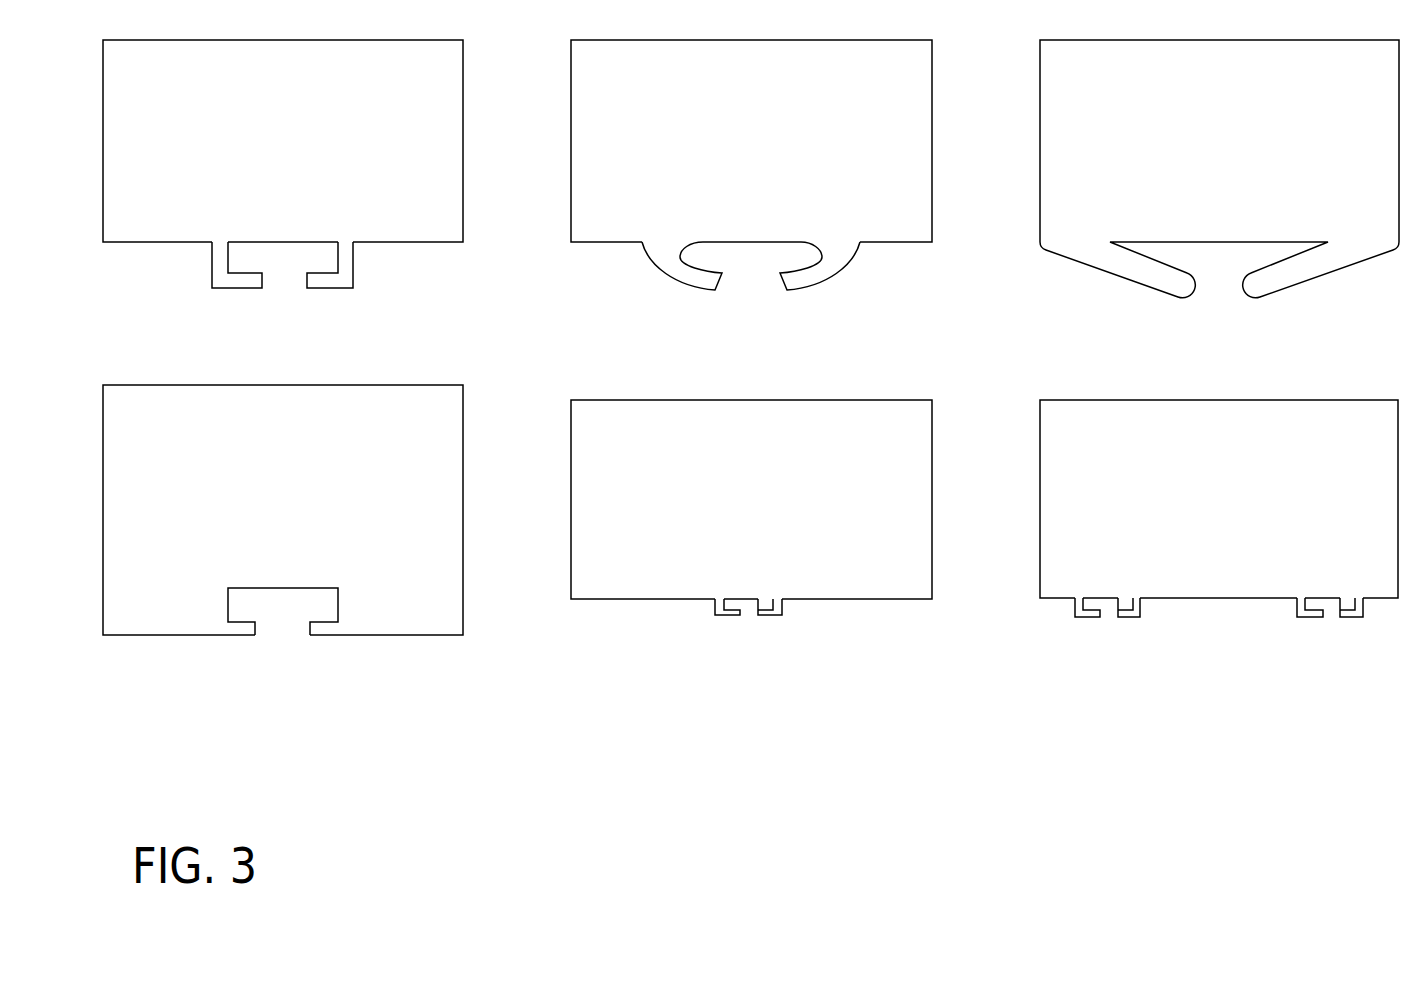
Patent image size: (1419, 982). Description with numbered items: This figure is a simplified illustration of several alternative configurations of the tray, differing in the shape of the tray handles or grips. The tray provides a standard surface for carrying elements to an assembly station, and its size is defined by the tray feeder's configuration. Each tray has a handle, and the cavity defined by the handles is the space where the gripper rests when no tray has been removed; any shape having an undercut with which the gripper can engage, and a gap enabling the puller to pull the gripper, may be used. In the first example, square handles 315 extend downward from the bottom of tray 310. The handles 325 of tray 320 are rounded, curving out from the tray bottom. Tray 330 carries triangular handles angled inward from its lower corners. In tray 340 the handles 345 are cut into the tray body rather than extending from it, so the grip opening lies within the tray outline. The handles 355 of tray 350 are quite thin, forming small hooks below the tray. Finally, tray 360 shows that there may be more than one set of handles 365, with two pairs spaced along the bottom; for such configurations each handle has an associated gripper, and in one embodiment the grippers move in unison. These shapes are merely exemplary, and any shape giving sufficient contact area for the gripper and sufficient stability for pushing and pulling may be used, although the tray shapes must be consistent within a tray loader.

The tray 310 is at (283, 141).
The square handles 315 is at (282, 282).
The tray 320 is at (751, 141).
The rounded handles 325 is at (751, 286).
The tray 330 is at (1219, 184).
The tray 340 is at (283, 510).
The cut-in handles 345 is at (283, 635).
The tray 350 is at (751, 499).
The thin handles 355 is at (751, 632).
The tray 360 is at (1219, 499).
The handle sets 365 is at (1219, 625).